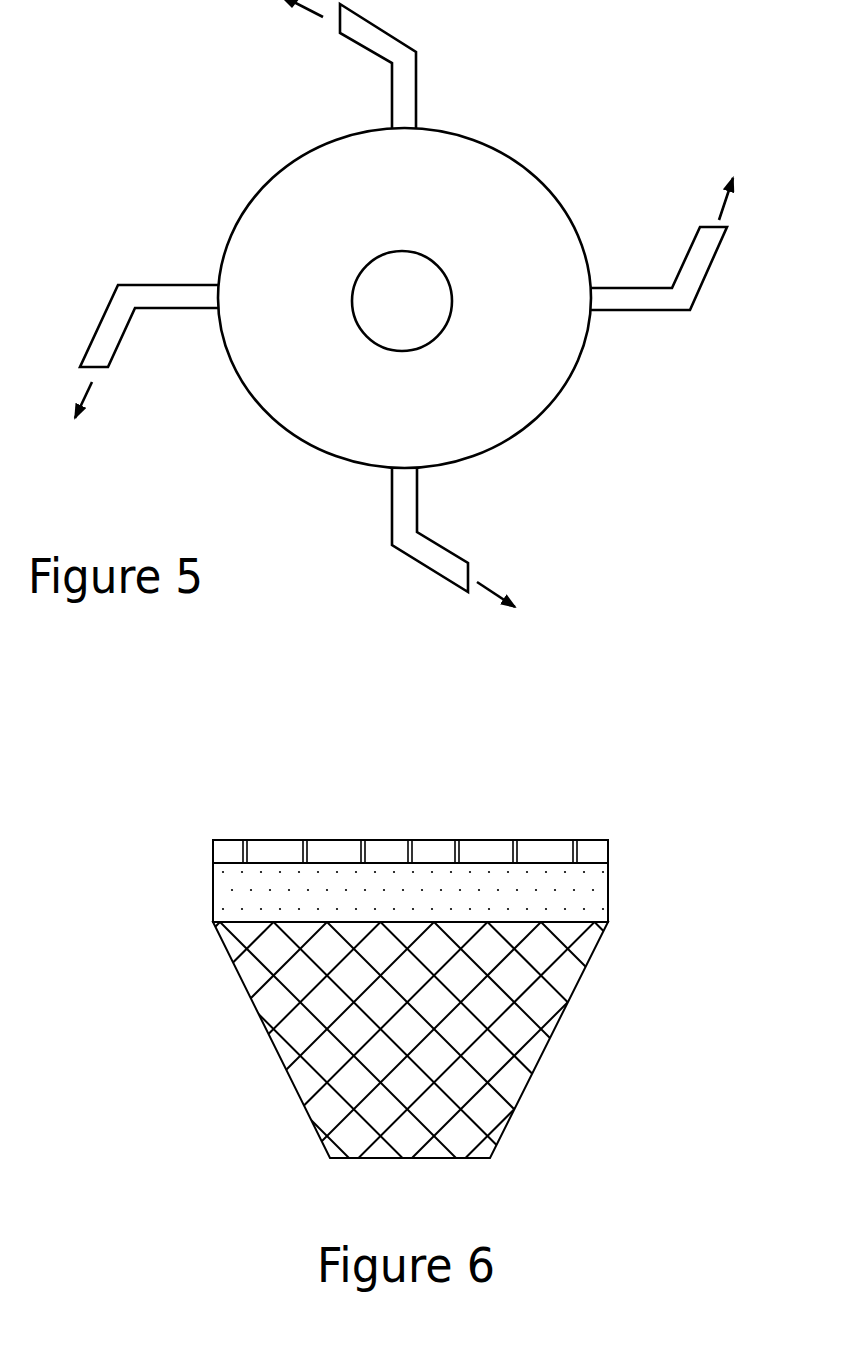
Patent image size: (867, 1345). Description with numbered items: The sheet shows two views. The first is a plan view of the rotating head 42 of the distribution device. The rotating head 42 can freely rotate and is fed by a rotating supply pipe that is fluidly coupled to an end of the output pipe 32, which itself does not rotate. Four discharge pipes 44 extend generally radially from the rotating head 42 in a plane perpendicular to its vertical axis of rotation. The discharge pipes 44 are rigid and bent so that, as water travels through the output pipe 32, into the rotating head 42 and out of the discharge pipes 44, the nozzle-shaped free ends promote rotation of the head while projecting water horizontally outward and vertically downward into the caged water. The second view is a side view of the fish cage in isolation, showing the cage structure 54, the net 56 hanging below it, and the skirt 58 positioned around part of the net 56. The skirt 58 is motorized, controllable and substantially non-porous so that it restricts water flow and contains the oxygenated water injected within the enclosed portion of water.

In FIG. 5, the output pipe 32 is at (397, 298).
In FIG. 5, the rotating head 42 is at (517, 238).
In FIG. 5, the discharge pipes 44 is at (405, 303).
In FIG. 6, the cage structure 54 is at (211, 851).
In FIG. 6, the net 56 is at (220, 960).
In FIG. 6, the skirt 58 is at (211, 898).